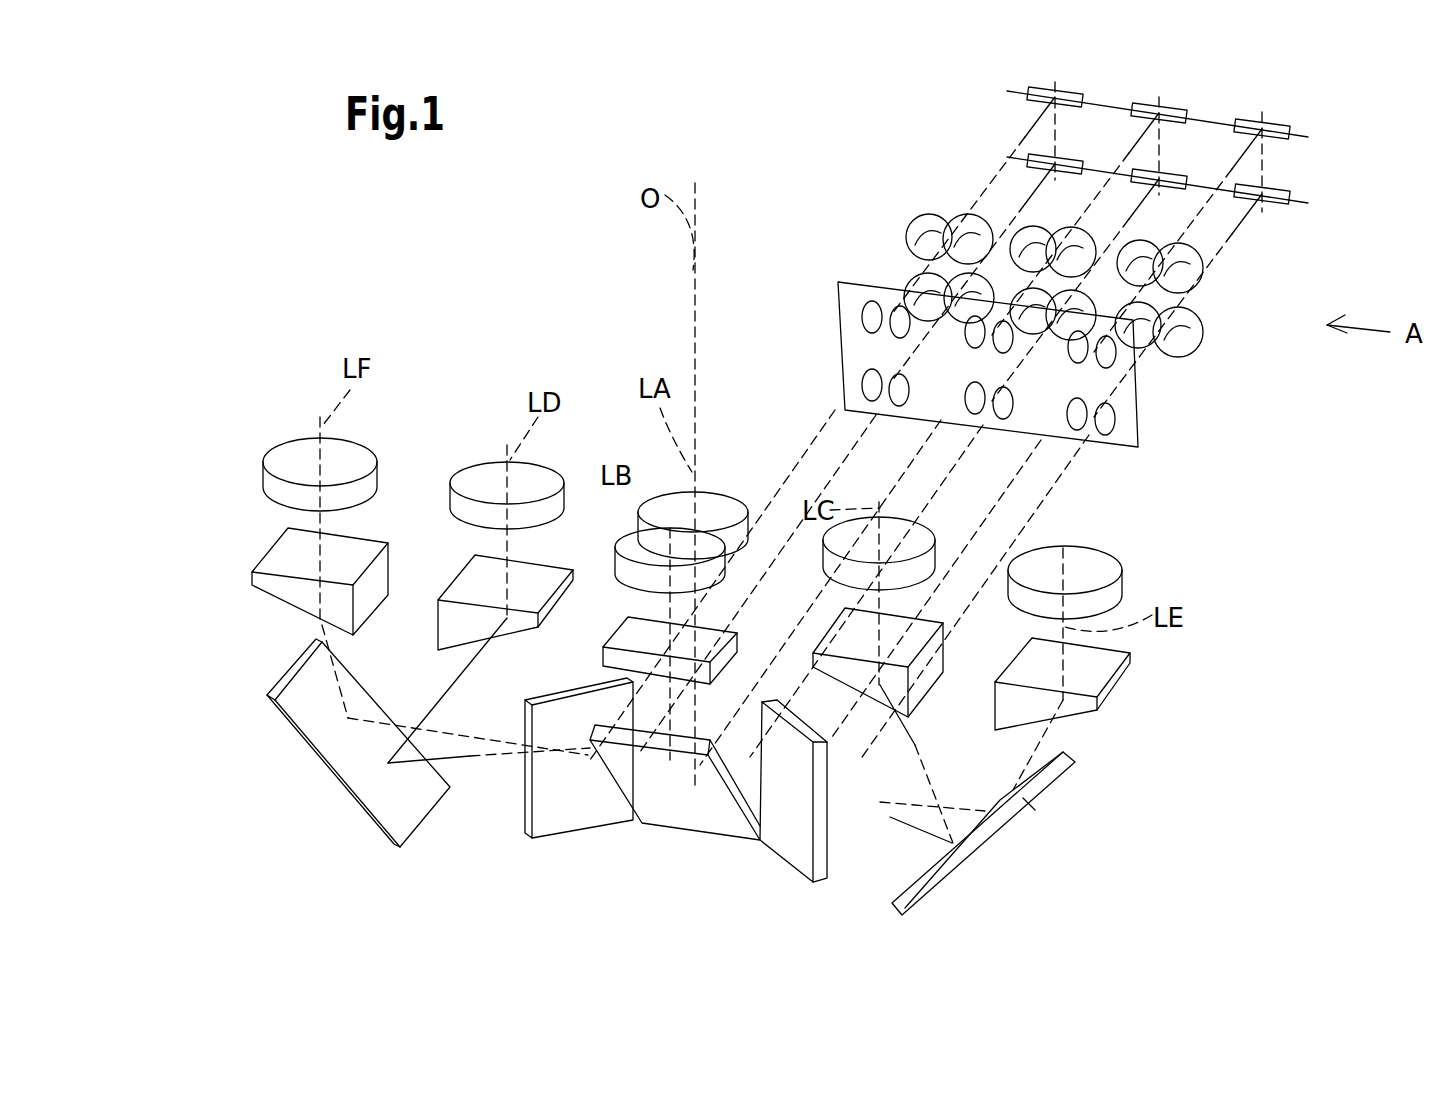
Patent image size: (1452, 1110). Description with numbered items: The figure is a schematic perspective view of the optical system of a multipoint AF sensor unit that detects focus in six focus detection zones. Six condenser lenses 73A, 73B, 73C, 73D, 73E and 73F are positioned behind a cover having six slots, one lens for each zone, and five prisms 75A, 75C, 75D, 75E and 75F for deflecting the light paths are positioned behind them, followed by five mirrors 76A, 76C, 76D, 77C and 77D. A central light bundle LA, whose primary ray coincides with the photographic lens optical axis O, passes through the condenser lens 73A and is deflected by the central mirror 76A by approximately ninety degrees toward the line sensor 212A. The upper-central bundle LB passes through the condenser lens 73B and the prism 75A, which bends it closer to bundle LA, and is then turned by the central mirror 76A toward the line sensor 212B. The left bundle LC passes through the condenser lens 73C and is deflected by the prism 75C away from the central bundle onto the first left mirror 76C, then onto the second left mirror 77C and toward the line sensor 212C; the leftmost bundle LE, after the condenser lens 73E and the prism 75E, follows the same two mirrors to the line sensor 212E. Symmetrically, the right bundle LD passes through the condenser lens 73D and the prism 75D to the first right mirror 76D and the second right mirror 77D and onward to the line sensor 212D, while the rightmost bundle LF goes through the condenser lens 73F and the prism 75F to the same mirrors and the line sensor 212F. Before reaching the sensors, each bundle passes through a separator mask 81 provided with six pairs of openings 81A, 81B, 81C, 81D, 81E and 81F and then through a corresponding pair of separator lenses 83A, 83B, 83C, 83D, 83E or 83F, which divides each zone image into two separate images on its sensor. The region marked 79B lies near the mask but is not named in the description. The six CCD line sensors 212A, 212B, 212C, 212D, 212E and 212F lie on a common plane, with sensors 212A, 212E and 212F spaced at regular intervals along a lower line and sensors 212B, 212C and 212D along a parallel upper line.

The CCD line sensor 212A is at (1173, 178).
The CCD line sensor 212B is at (1172, 107).
The CCD line sensor 212C is at (1273, 128).
The CCD line sensor 212D is at (1068, 93).
The CCD line sensor 212E is at (1283, 193).
The CCD line sensor 212F is at (1088, 138).
The pair of separator lenses 83A is at (1058, 230).
The pair of separator lenses 83B is at (1022, 303).
The pair of separator lenses 83C is at (1197, 258).
The pair of separator lenses 83D is at (913, 223).
The pair of separator lenses 83E is at (1192, 327).
The pair of separator lenses 83F is at (925, 283).
The separator mask 81 is at (843, 362).
The aperture plate portion 79B is at (942, 364).
The pair of openings 81A is at (977, 400).
The pair of openings 81B is at (1010, 340).
The pair of openings 81C is at (1113, 360).
The pair of openings 81D is at (877, 297).
The pair of openings 81E is at (1127, 420).
The pair of openings 81F is at (873, 357).
The condenser lens 73A is at (658, 500).
The condenser lens 73B is at (640, 548).
The condenser lens 73C is at (852, 552).
The condenser lens 73D is at (483, 490).
The condenser lens 73E is at (1120, 565).
The condenser lens 73F is at (292, 467).
The prism 75A is at (625, 630).
The prism 75C is at (933, 685).
The prism 75D is at (463, 590).
The prism 75E is at (1095, 670).
The prism 75F is at (290, 545).
The central mirror 76A is at (695, 817).
The first left mirror 76C is at (898, 906).
The first right mirror 76D is at (423, 803).
The second left mirror 77C is at (783, 840).
The second right mirror 77D is at (590, 810).